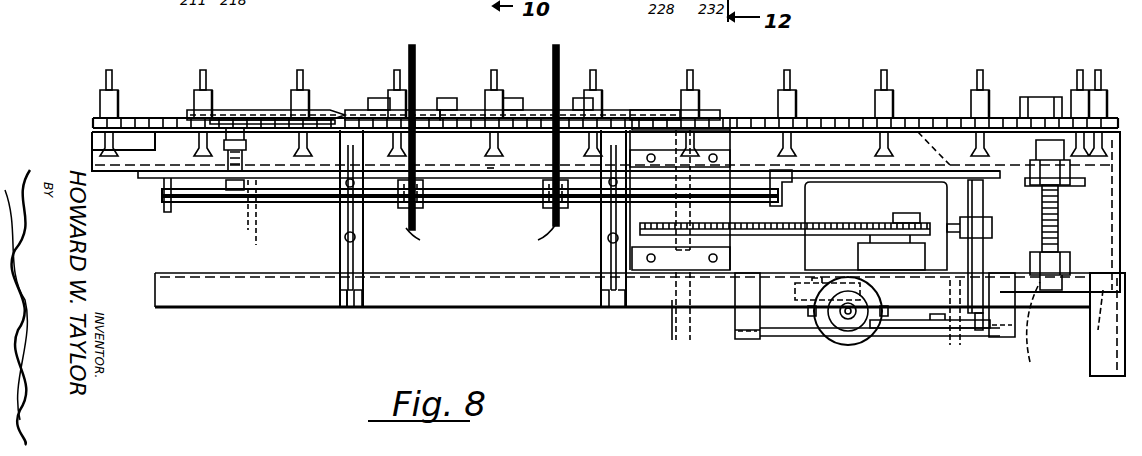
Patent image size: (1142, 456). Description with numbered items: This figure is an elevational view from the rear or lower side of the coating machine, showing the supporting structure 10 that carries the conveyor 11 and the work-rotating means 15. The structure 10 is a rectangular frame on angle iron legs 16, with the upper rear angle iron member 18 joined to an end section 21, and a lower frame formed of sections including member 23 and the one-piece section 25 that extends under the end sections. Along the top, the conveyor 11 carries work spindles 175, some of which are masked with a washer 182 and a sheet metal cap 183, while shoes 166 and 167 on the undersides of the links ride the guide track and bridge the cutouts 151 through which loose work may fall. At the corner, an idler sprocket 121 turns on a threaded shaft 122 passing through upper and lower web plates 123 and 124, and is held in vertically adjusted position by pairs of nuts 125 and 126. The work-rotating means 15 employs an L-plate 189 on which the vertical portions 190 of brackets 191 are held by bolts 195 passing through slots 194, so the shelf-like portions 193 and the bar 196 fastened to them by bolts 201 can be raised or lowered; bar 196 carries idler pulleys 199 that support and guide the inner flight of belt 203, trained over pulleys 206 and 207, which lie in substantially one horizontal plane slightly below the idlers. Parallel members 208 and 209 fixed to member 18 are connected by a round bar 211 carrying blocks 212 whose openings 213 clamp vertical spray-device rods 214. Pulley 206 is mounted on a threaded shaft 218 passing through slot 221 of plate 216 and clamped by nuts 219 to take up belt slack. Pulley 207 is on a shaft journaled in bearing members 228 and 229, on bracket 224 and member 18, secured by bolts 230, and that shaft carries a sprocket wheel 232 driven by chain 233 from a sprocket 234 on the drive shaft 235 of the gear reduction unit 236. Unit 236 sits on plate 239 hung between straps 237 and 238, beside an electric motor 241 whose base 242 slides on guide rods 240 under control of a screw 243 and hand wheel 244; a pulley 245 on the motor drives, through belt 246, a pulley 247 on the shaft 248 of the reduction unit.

The structure 10 is at (475, 320).
The conveyor 11 is at (145, 114).
The means for rotating the work 15 is at (685, 358).
The legs 16 is at (1104, 376).
The angle iron member 18 is at (112, 170).
The end section 21 is at (1071, 212).
The lower angle iron frame member 23 is at (236, 300).
The lower frame section 25 is at (1099, 312).
The idler sprocket 121 is at (1040, 118).
The threaded shaft 122 is at (1060, 222).
The upper web plate 123 is at (1074, 186).
The lower web plate 124 is at (1072, 262).
The upper pair of nuts 125 is at (1030, 184).
The lower pair of nuts 126 is at (1024, 330).
The cutouts 151 is at (920, 116).
The shoe 166 is at (278, 168).
The shoe 167 is at (980, 148).
The work carrying spindle 175 is at (1080, 66).
The washer 182 is at (1106, 88).
The sheet metal cap 183 is at (1100, 68).
The L-plate 189 is at (614, 300).
The vertical portion 190 is at (601, 252).
The bracket 191 is at (598, 288).
The shelf-like portion 193 is at (347, 182).
The slot 194 is at (612, 290).
The bolt 195 is at (610, 210).
The bar 196 is at (516, 168).
The idler pulley 199 is at (578, 98).
The bolt 201 is at (622, 112).
The belt 203 is at (300, 112).
The pulley 206 is at (288, 118).
The pulley 207 is at (716, 112).
The member 208 is at (150, 182).
The member 209 is at (785, 195).
The round bar 211 is at (492, 203).
The block 212 is at (552, 210).
The opening 213 is at (562, 216).
The vertical rod 214 is at (481, 238).
The plate 216 is at (264, 210).
The threaded shaft 218 is at (234, 110).
The clamping nuts 219 is at (234, 192).
The elongated slot 221 is at (245, 217).
The bracket 224 is at (739, 220).
The bearing member 228 is at (646, 112).
The bearing member 229 is at (677, 323).
The bolts 230 is at (713, 264).
The sprocket wheel 232 is at (670, 232).
The chain 233 is at (710, 232).
The sprocket 234 is at (908, 212).
The drive shaft 235 is at (913, 250).
The gear reduction unit 236 is at (924, 337).
The strap 237 is at (748, 340).
The strap 238 is at (1002, 338).
The plate 239 is at (772, 338).
The guide rods 240 is at (896, 318).
The electric motor 241 is at (876, 226).
The base portion 242 is at (796, 290).
The screw 243 is at (846, 322).
The hand wheel 244 is at (850, 320).
The pulley 245 is at (986, 204).
The belt 246 is at (992, 226).
The pulley 247 is at (986, 250).
The shaft 248 is at (959, 323).